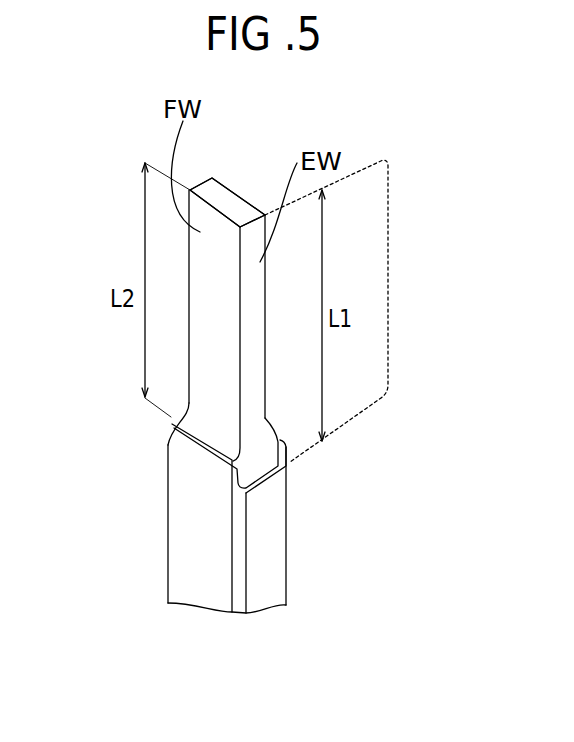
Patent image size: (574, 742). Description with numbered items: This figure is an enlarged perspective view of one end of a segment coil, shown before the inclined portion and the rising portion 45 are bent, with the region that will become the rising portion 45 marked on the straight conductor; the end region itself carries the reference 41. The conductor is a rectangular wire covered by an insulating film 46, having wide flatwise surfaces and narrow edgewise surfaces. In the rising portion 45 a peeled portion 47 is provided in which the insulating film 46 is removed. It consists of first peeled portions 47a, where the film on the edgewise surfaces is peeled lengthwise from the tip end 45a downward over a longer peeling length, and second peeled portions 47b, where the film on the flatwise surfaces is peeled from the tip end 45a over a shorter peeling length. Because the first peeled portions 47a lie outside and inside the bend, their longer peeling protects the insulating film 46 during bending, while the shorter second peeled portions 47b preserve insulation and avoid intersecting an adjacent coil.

The terminal 41 is at (252, 181).
The rising portion 45 is at (388, 268).
The tip end 45a is at (220, 197).
The insulating film 46 is at (183, 569).
The peeled portion 47 is at (198, 423).
The first peeled portion 47a is at (263, 408).
The second peeled portion 47b is at (200, 377).